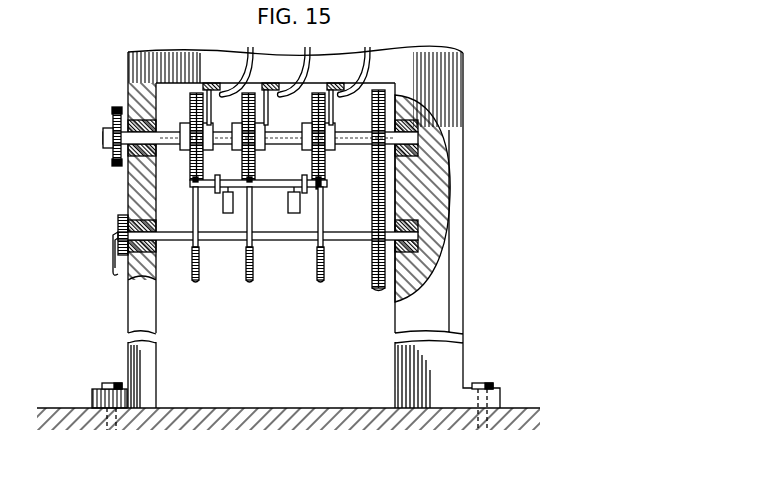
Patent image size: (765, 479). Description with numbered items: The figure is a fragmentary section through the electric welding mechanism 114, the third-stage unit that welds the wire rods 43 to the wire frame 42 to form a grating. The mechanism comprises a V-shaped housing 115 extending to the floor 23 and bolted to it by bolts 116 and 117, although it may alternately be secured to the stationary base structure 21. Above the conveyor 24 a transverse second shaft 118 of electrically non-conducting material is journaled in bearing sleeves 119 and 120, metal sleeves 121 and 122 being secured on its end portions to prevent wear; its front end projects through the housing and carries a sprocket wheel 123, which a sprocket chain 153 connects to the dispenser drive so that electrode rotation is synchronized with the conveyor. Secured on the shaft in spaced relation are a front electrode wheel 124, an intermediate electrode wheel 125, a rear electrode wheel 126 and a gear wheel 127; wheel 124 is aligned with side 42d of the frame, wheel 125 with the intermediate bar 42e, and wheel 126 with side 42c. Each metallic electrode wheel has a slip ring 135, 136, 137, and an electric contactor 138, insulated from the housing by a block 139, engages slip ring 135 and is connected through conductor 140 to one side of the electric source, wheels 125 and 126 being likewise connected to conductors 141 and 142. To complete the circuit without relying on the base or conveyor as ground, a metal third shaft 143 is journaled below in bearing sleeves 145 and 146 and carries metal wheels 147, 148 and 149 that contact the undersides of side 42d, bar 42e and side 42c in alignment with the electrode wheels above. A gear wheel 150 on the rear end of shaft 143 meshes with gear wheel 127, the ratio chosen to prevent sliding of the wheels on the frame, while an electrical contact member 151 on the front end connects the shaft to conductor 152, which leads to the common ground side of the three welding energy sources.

The stationary base structure 21 is at (226, 210).
The floor 23 is at (273, 407).
The conveyor 24 is at (219, 172).
The wire frame 42 is at (326, 182).
The side of the wire frame 42c is at (322, 187).
The side of the wire frame 42d is at (194, 182).
The intermediate bar 42e is at (252, 188).
The wire rods 43 is at (268, 180).
The electric welding mechanism 114 is at (470, 142).
The housing 115 is at (450, 182).
The bolt 116 is at (112, 386).
The bolt 117 is at (488, 384).
The second shaft 118 is at (355, 144).
The bearing sleeve 119 is at (140, 125).
The bearing sleeve 120 is at (414, 148).
The metal sleeve 121 is at (150, 117).
The metal sleeve 122 is at (407, 127).
The sprocket wheel 123 is at (111, 157).
The front electrode wheel 124 is at (187, 107).
The intermediate electrode wheel 125 is at (240, 104).
The rear electrode wheel 126 is at (309, 104).
The gear wheel 127 is at (369, 104).
The slip ring 135 is at (213, 121).
The slip ring 136 is at (262, 128).
The slip ring 137 is at (333, 128).
The electric contactor 138 is at (208, 84).
The insulating block 139 is at (213, 84).
The conductor 140 is at (250, 46).
The conductor 141 is at (311, 47).
The conductor 142 is at (371, 47).
The third shaft 143 is at (332, 241).
The bearing sleeve 145 is at (112, 163).
The bearing sleeve 146 is at (419, 226).
The metal wheel 147 is at (195, 283).
The metal wheel 148 is at (250, 283).
The metal wheel 149 is at (321, 283).
The gear wheel 150 is at (375, 290).
The electrical contact member 151 is at (121, 221).
The conductor 152 is at (112, 266).
The sprocket chain 153 is at (111, 111).